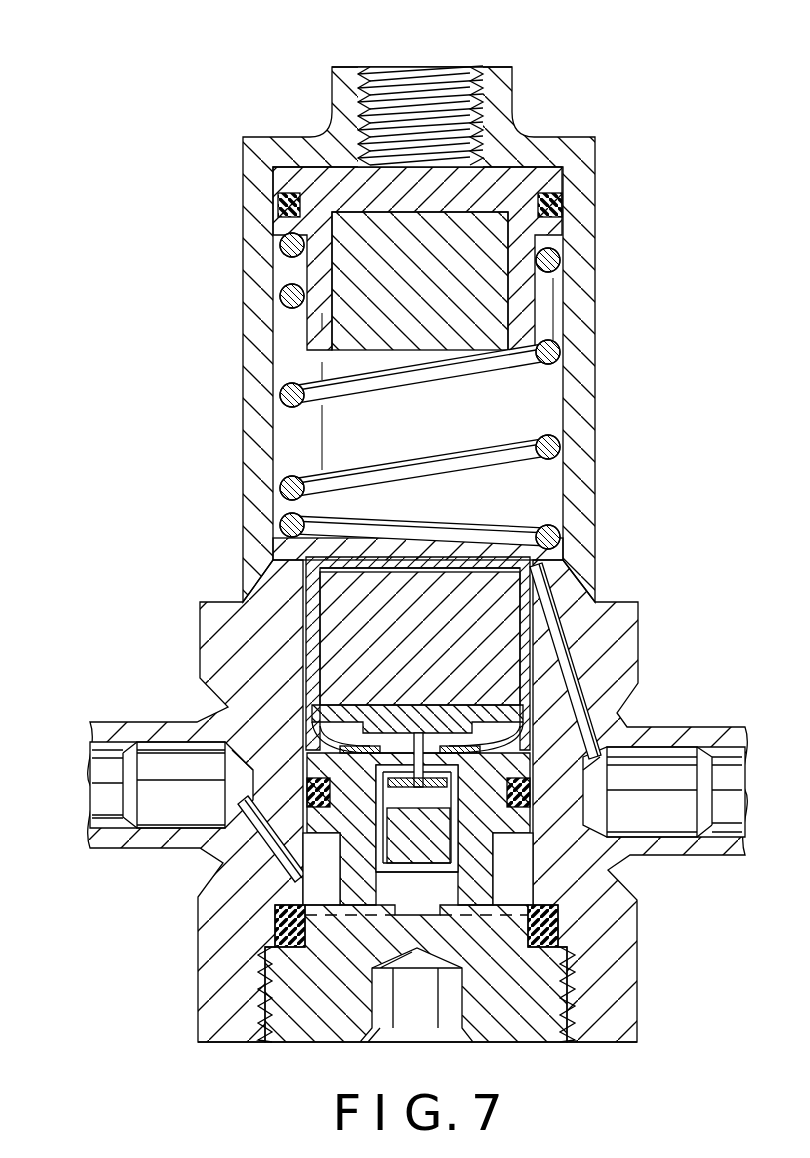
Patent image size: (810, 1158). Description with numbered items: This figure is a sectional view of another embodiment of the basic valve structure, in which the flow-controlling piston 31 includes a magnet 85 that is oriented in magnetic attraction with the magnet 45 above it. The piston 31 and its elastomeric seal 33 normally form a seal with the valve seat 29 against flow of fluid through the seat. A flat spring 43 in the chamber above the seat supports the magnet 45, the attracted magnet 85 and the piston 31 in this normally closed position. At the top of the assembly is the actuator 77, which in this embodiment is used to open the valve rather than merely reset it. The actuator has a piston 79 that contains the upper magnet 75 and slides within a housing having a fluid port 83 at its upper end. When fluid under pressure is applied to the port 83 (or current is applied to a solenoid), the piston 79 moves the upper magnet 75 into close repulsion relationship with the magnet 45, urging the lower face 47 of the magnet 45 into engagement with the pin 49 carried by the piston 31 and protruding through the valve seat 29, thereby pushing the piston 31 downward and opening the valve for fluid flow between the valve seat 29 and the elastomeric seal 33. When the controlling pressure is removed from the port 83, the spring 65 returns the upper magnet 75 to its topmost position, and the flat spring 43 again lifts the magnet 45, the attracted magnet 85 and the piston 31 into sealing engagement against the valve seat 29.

The fluid port 83 is at (418, 88).
The piston 79 is at (548, 180).
The upper magnet 75 is at (497, 302).
The actuator 77 is at (418, 419).
The spring 65 is at (556, 447).
The magnet 45 is at (497, 592).
The pin 49 is at (372, 742).
The lower face 47 is at (421, 755).
The flat spring 43 is at (495, 740).
The valve seat 29 is at (402, 770).
The elastomeric seal 33 is at (433, 781).
The piston 31 is at (452, 847).
The magnet 85 is at (438, 850).